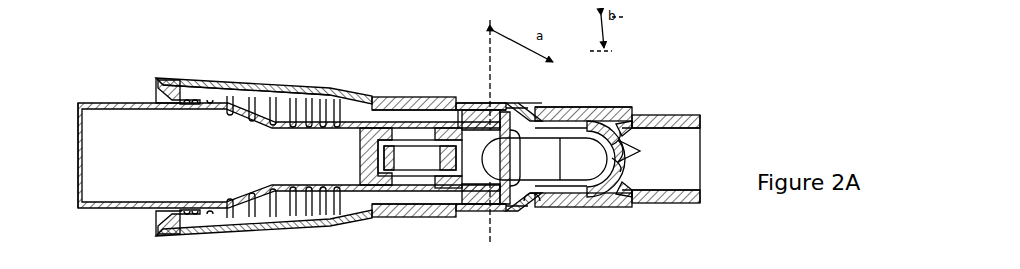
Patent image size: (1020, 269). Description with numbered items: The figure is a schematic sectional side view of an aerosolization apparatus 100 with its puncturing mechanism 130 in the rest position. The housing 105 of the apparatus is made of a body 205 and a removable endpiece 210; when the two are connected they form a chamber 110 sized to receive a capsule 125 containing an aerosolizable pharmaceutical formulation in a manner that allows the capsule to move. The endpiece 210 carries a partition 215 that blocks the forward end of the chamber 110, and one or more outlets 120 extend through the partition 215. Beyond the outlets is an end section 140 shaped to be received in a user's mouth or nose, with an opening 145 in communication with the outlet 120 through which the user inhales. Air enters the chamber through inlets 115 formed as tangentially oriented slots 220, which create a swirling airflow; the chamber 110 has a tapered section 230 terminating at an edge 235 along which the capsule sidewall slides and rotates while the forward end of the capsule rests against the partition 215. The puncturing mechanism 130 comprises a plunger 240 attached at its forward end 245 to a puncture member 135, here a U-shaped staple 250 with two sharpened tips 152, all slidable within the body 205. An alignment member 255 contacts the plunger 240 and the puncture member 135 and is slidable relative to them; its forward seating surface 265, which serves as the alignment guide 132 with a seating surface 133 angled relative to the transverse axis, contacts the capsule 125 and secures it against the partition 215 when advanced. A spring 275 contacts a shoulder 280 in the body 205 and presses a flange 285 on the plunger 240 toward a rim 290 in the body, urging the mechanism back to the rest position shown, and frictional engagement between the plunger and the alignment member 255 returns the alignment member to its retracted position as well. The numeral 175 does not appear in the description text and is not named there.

The aerosolization apparatus 100 is at (648, 46).
The housing 105 is at (431, 78).
The chamber 110 is at (591, 206).
The air inlets 115 is at (524, 222).
The air outlets 120 is at (641, 151).
The capsule 125 is at (546, 166).
The puncturing mechanism 130 is at (95, 82).
The alignment guide 132 is at (460, 80).
The seating surface 133 is at (491, 140).
The puncture member 135 is at (405, 184).
The end section 140 is at (646, 105).
The opening 145 is at (703, 138).
The sharpened tips 152 is at (473, 215).
The spring shell 175 is at (212, 63).
The body 205 is at (396, 96).
The removable endpiece 210 is at (628, 108).
The partition 215 is at (626, 206).
The tangentially oriented slots 220 is at (505, 107).
The tapered section 230 is at (532, 105).
The edge 235 is at (548, 212).
The plunger 240 is at (127, 116).
The forward end 245 is at (376, 163).
The U-shaped staple 250 is at (420, 158).
The alignment member 255 is at (466, 103).
The forward seating surface 265 is at (491, 96).
The spring 275 is at (283, 95).
The shoulder 280 is at (341, 222).
The flange 285 is at (178, 231).
The rim 290 is at (157, 236).